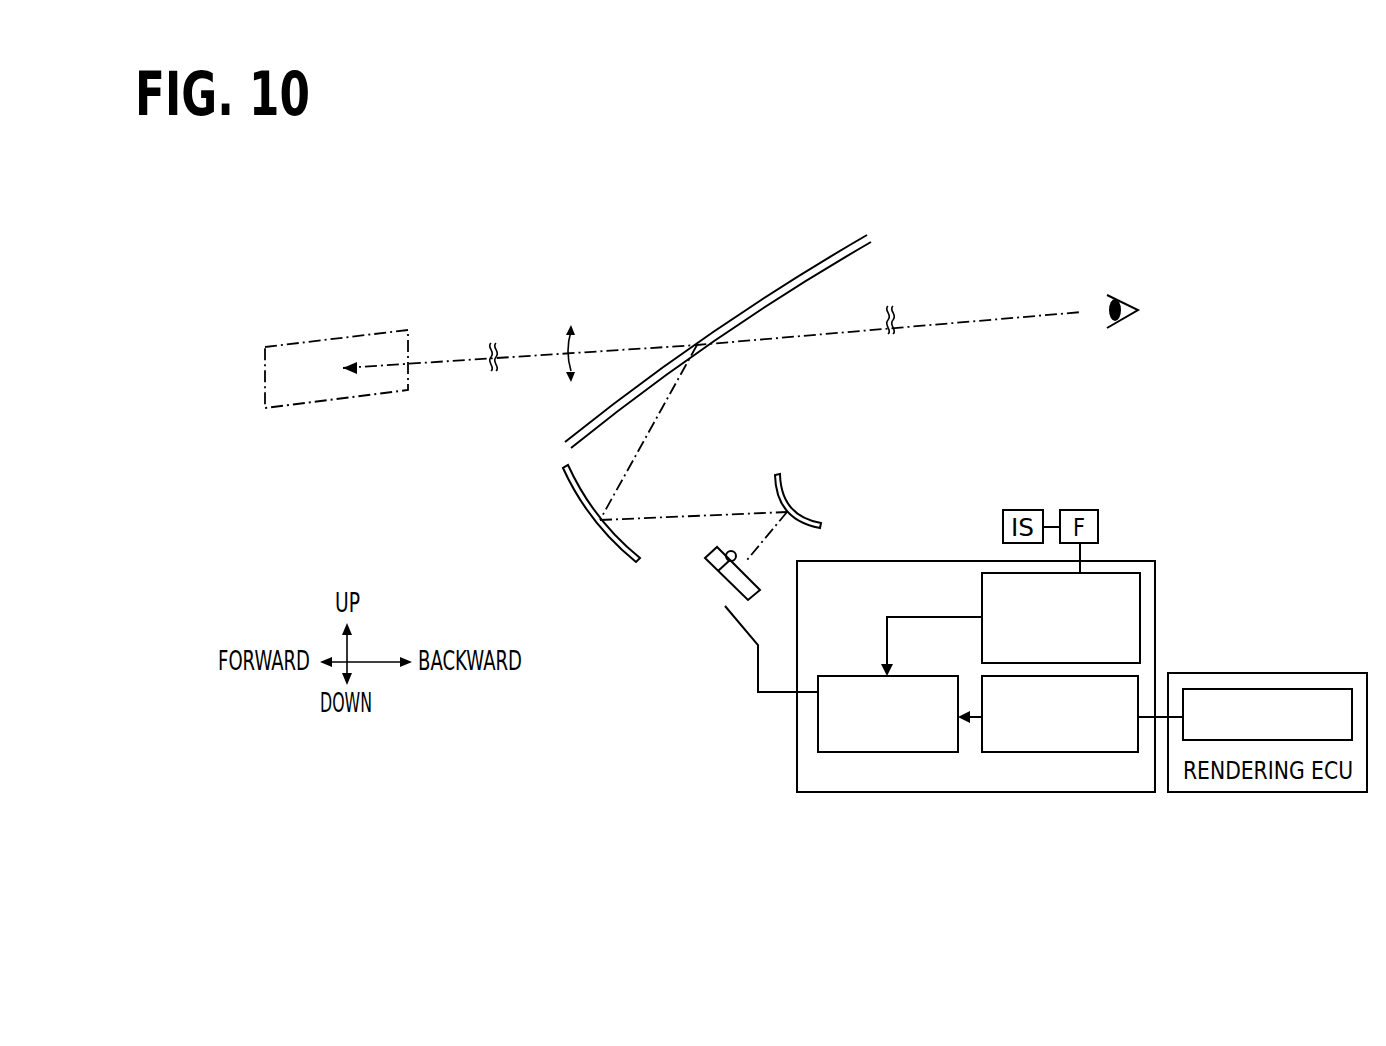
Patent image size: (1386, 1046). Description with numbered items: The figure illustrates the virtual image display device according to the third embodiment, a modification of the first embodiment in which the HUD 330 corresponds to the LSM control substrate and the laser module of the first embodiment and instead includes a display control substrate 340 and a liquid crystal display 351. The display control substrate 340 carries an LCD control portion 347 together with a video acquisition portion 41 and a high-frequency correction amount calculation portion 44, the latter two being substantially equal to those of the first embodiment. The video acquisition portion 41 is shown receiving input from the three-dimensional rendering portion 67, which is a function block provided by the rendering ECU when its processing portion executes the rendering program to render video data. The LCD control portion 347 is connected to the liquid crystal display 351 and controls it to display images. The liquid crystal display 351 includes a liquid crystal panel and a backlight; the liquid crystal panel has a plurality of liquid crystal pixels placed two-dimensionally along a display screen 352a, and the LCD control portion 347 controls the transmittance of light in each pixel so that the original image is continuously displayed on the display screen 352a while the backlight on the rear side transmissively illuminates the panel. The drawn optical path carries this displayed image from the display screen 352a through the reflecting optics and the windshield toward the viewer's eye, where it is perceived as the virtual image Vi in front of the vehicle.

The virtual image Vi is at (336, 407).
The HUD 330 is at (555, 481).
The display screen 352a is at (715, 578).
The liquid crystal display 351 is at (729, 582).
The display control substrate 340 is at (860, 792).
The LCD control portion 347 is at (818, 730).
The high-frequency correction amount calculation portion 44 is at (1155, 595).
The video acquisition portion 41 is at (1143, 752).
The 3D rendering portion 67 is at (1307, 689).